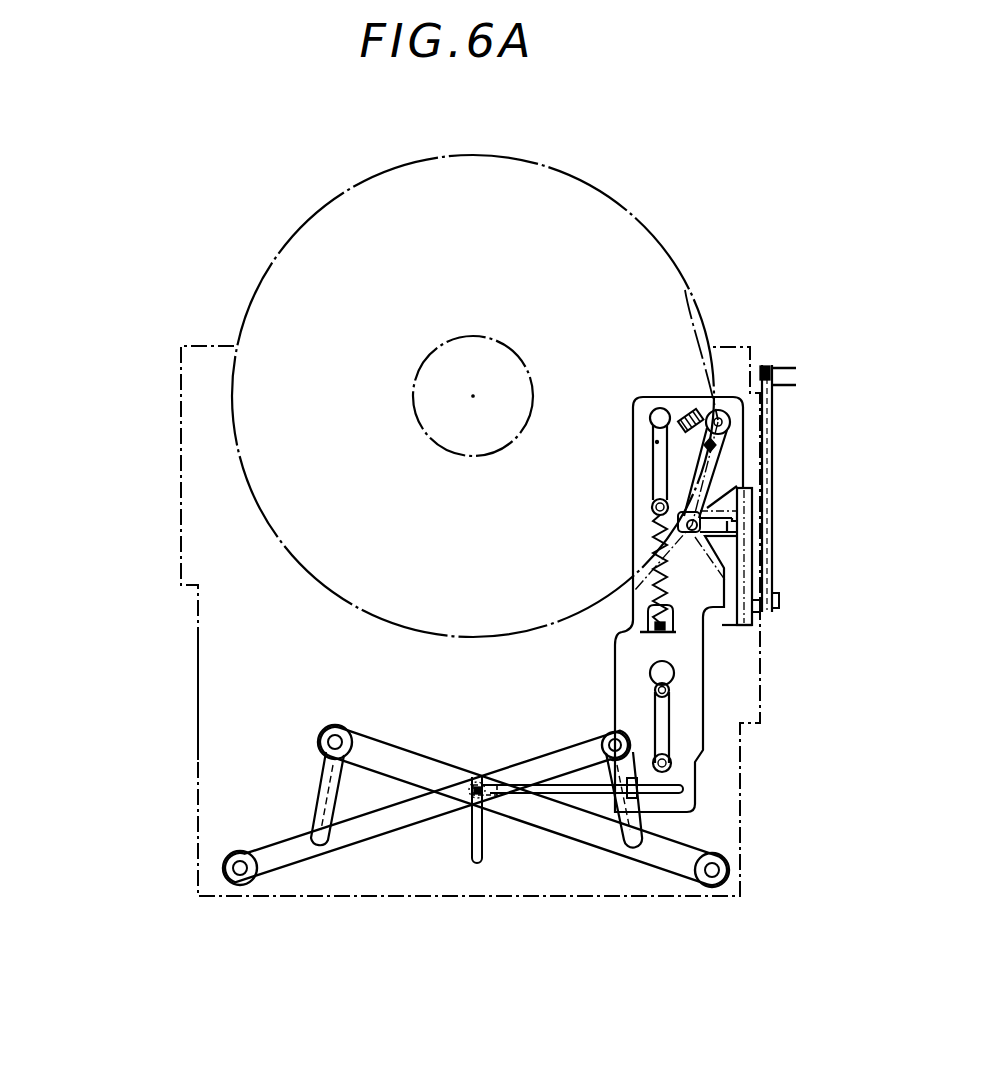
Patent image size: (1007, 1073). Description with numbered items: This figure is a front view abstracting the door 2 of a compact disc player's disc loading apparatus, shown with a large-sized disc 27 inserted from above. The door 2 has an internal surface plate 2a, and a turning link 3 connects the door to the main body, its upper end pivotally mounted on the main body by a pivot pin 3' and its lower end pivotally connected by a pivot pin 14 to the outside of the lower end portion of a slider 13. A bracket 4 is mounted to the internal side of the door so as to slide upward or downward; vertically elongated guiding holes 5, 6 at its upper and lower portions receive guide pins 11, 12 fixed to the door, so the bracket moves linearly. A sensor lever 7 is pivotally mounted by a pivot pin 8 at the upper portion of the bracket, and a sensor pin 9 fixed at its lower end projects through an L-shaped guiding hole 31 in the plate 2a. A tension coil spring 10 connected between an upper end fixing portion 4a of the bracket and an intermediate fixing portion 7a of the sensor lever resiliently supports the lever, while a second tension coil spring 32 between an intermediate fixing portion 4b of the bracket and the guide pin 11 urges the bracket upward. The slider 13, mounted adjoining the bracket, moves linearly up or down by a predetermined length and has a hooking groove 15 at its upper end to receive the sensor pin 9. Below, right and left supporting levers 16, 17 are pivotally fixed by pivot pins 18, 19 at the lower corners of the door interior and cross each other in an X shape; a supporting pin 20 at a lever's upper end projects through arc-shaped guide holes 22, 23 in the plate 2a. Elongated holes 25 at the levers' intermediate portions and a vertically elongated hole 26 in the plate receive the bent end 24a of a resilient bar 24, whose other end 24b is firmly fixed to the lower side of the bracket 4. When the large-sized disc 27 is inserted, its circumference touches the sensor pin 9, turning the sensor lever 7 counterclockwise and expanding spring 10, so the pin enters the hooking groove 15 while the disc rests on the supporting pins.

The door 2 is at (171, 376).
The internal surface plate 2a is at (212, 686).
The turning link 3 is at (804, 488).
The pivot pin 3' is at (806, 374).
The bracket 4 is at (692, 697).
The upper end fixing portion 4a is at (686, 412).
The intermediate fixing portion 4b is at (630, 625).
The elongated guiding hole 5 is at (657, 442).
The elongated guiding hole 6 is at (668, 725).
The sensor lever 7 is at (713, 472).
The intermediate fixing portion 7a is at (714, 447).
The pivot pin 8 is at (729, 415).
The sensor pin 9 is at (698, 523).
The tension coil spring 10 is at (723, 432).
The guide pin 11 is at (652, 508).
The guide pin 12 is at (655, 690).
The slider 13 is at (752, 575).
The pivot pin 14 is at (778, 602).
The hooking groove 15 is at (732, 527).
The supporting lever 16 is at (365, 842).
The supporting lever 17 is at (630, 850).
The pivot pin 18 is at (240, 885).
The pivot pin 19 is at (730, 870).
The supporting pin 20 is at (337, 733).
The arc-shaped guide hole 22 is at (322, 778).
The arc-shaped guide hole 23 is at (640, 828).
The resilient bar 24 is at (587, 794).
The bent end 24a is at (478, 808).
The other end 24b is at (697, 800).
The elongated hole 25 is at (495, 803).
The vertically elongated hole 26 is at (473, 863).
The large-sized disc 27 is at (649, 228).
The guiding hole 31 is at (748, 625).
The tension coil spring 32 is at (660, 553).